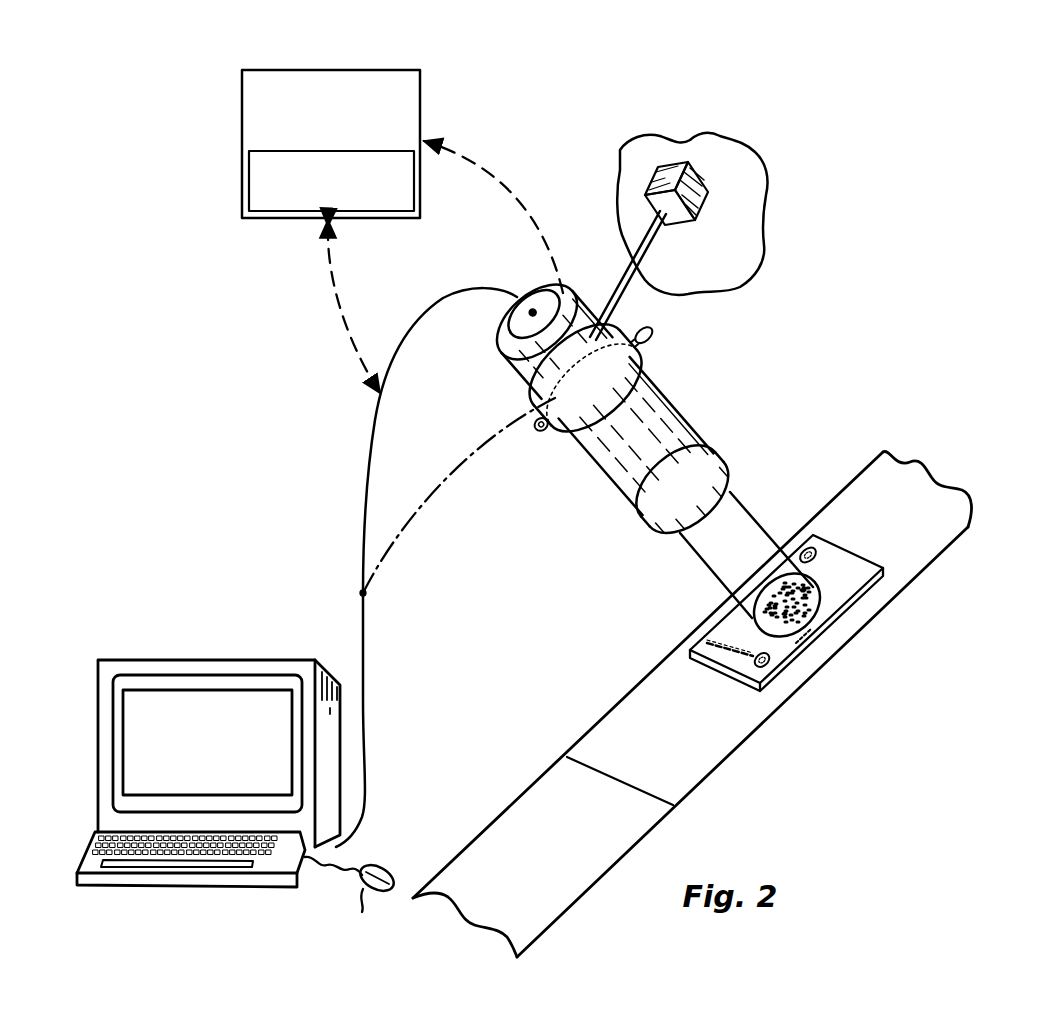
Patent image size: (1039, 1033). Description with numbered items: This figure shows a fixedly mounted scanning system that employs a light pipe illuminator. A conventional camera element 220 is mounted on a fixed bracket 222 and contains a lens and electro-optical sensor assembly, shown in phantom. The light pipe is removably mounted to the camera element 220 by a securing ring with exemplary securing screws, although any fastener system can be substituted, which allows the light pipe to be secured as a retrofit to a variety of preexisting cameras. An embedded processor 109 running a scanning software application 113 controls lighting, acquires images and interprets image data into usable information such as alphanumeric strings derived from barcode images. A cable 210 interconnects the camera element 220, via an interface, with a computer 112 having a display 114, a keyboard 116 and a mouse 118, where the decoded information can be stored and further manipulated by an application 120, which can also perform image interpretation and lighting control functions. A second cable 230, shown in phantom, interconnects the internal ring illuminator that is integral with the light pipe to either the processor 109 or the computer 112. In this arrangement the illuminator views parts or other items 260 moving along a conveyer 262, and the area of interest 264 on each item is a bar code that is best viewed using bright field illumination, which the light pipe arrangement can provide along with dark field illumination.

The on-board/embedded processor 109 is at (421, 84).
The scanning software application 113 is at (243, 200).
The computer 112 is at (255, 763).
The display 114 is at (268, 682).
The keyboard 116 is at (303, 880).
The mouse 118 is at (364, 910).
The application 120 is at (217, 692).
The cable 210 is at (367, 661).
The camera element 220 is at (616, 372).
The fixed bracket 222 is at (720, 257).
The cable 230 is at (487, 437).
The item 260 is at (852, 590).
The conveyer 262 is at (933, 545).
The area of interest 264 is at (822, 632).